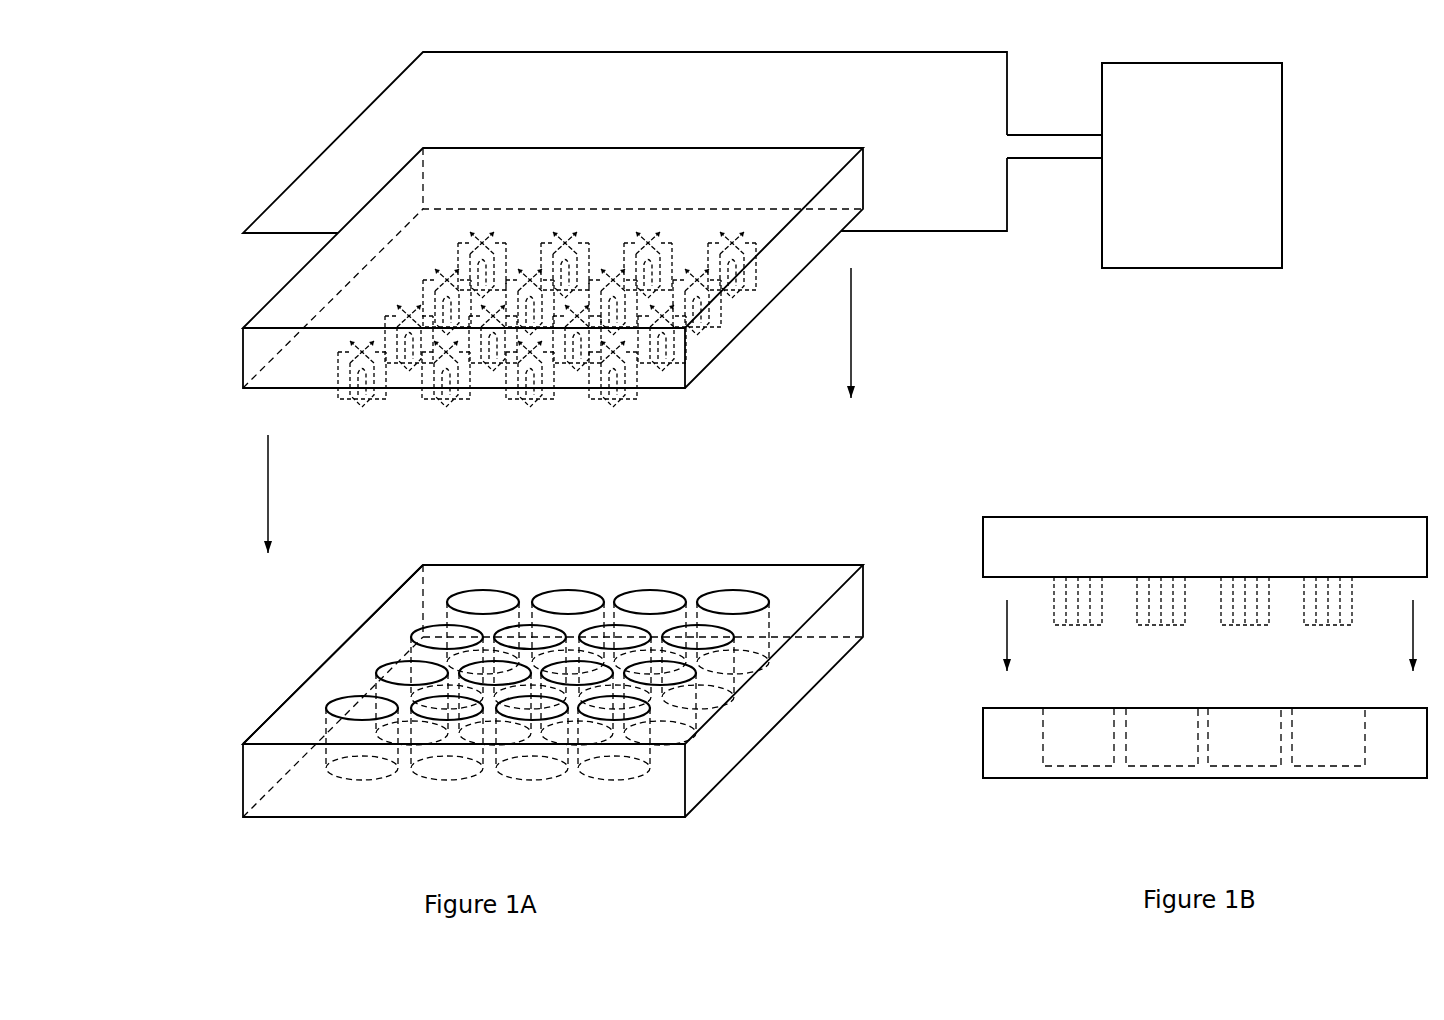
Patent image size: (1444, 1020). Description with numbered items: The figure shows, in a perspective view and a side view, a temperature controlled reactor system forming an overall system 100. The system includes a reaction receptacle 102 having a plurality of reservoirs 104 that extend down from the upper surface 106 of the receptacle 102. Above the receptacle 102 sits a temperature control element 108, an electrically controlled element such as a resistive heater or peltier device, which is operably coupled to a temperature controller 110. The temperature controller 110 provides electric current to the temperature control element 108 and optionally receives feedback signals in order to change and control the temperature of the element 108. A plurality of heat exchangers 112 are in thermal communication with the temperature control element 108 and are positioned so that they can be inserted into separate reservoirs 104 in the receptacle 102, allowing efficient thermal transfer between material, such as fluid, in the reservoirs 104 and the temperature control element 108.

In FIG. 1A, the overall system 100 is at (277, 110).
In FIG. 1A, the reaction receptacle 102 is at (689, 771).
In FIG. 1A, the reservoirs 104 is at (735, 598).
In FIG. 1A, the upper surface 106 is at (397, 611).
In FIG. 1A, the temperature control element 108 is at (288, 294).
In FIG. 1A, the temperature controller 110 is at (1144, 165).
In FIG. 1A, the heat exchangers 112 is at (586, 414).
In FIG. 1B, the heat exchangers 112 is at (1305, 627).